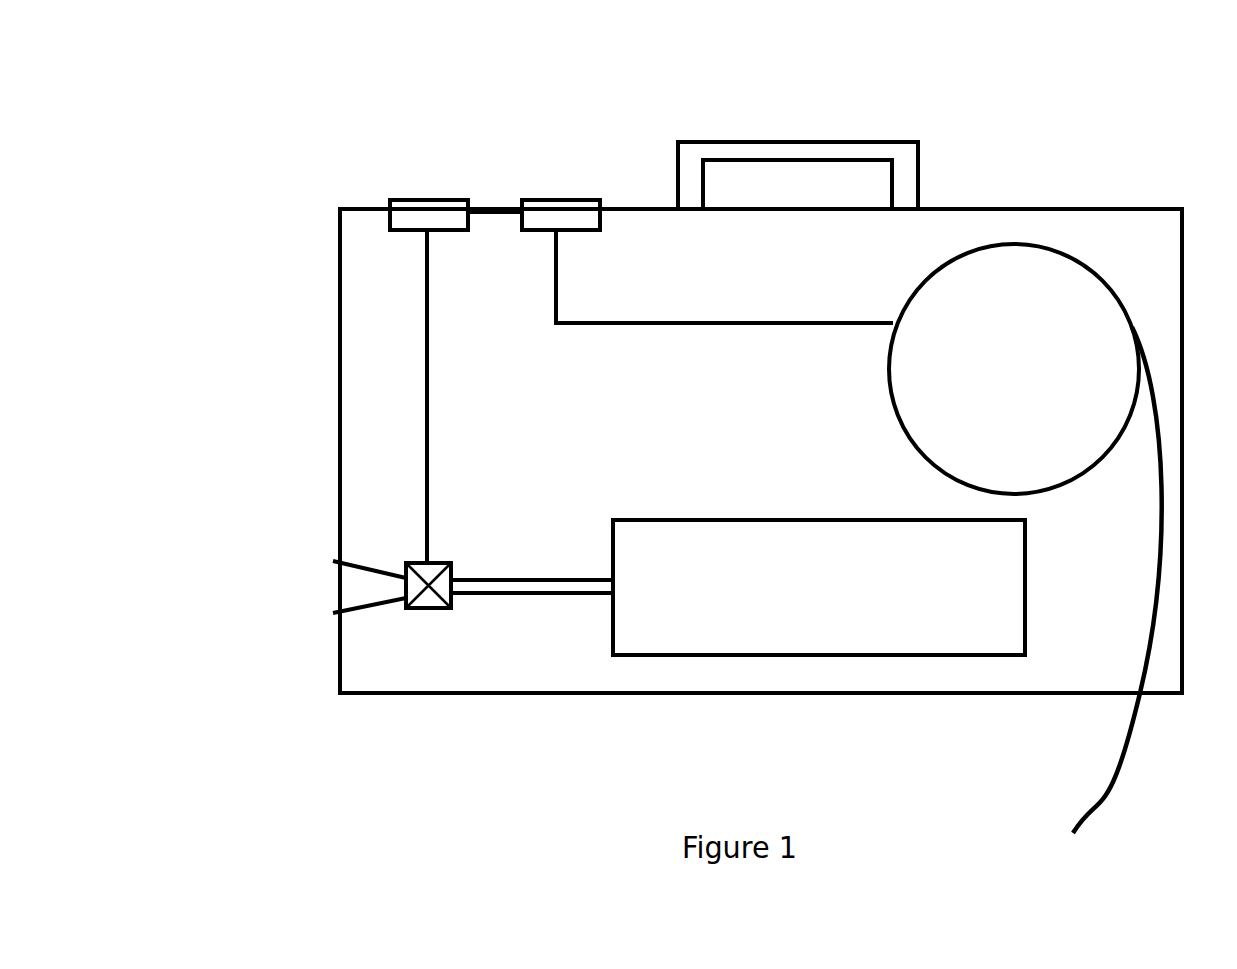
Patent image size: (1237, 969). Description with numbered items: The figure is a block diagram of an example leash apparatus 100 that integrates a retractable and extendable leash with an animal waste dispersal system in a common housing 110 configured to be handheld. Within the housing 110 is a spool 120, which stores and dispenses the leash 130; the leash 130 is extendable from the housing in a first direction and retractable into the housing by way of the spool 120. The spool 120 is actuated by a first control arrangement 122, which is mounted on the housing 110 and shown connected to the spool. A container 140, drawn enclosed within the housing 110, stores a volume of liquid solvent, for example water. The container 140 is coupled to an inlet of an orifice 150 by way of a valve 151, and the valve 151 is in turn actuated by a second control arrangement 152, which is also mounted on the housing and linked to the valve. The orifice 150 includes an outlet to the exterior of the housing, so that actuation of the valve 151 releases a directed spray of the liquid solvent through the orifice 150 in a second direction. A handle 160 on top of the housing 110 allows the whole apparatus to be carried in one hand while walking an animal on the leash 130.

The leash apparatus 100 is at (282, 84).
The housing 110 is at (340, 290).
The spool 120 is at (1098, 272).
The first control arrangement 122 is at (540, 198).
The leash 130 is at (1115, 777).
The container 140 is at (972, 621).
The orifice 150 is at (367, 555).
The valve 151 is at (440, 590).
The second control arrangement 152 is at (403, 198).
The handle 160 is at (845, 140).